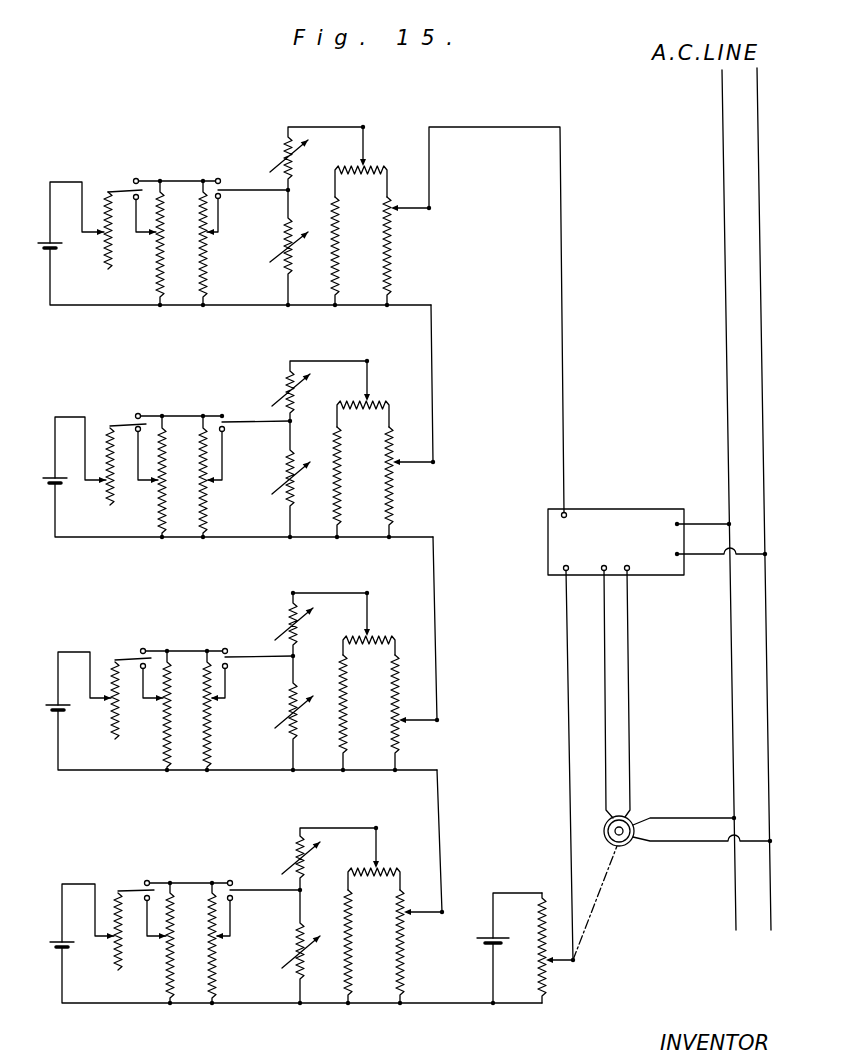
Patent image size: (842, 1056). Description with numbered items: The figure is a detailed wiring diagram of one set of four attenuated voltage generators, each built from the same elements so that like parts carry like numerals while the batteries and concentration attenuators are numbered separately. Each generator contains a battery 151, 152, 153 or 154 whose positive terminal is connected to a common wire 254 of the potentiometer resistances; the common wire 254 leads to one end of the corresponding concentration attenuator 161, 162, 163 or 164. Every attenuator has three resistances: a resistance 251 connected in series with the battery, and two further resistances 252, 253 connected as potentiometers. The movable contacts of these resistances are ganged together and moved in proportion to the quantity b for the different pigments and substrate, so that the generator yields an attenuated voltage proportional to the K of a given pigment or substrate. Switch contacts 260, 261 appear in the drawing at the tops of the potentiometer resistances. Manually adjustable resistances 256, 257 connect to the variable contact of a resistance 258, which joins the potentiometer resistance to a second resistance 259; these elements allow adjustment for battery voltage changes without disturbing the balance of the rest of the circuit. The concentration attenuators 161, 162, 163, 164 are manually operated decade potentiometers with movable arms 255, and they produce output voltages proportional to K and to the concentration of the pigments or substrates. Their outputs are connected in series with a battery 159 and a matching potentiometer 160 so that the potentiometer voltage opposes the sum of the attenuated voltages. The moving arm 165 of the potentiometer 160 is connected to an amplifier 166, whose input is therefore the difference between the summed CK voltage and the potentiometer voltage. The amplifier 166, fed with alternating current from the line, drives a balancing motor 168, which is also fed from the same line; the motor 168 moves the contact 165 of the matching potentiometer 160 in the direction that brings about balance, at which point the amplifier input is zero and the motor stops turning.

The battery 151 is at (48, 250).
The battery 152 is at (53, 484).
The battery 153 is at (56, 712).
The battery 154 is at (60, 948).
The battery 159 is at (484, 941).
The matching potentiometer 160 is at (541, 898).
The concentration attenuator 161 is at (392, 258).
The concentration attenuator 162 is at (395, 492).
The concentration attenuator 163 is at (405, 743).
The concentration attenuator 164 is at (403, 960).
The moving arm 165 is at (562, 963).
The amplifier 166 is at (634, 508).
The balancing motor 168 is at (626, 850).
The resistance 251 is at (106, 268).
The resistance 252 is at (166, 278).
The resistance 253 is at (208, 278).
The common wire 254 is at (75, 305).
The movable arm 255 is at (430, 182).
The manually adjustable resistance 256 is at (290, 274).
The manually adjustable resistance 257 is at (285, 142).
The resistance 258 is at (374, 166).
The second resistance 259 is at (346, 272).
The switch 260 is at (122, 188).
The switch 261 is at (228, 188).